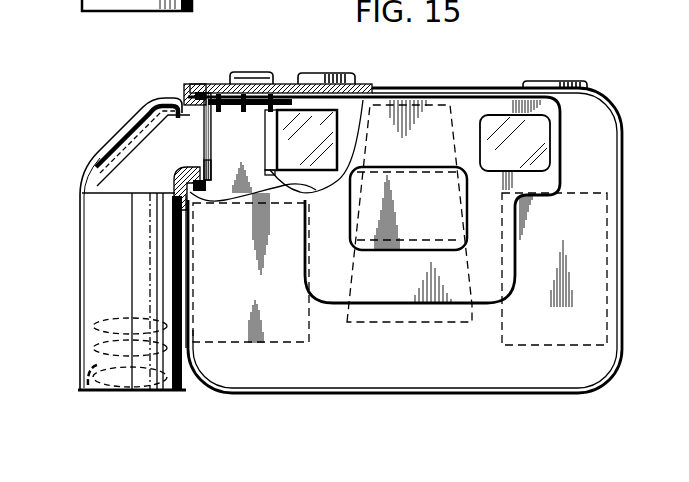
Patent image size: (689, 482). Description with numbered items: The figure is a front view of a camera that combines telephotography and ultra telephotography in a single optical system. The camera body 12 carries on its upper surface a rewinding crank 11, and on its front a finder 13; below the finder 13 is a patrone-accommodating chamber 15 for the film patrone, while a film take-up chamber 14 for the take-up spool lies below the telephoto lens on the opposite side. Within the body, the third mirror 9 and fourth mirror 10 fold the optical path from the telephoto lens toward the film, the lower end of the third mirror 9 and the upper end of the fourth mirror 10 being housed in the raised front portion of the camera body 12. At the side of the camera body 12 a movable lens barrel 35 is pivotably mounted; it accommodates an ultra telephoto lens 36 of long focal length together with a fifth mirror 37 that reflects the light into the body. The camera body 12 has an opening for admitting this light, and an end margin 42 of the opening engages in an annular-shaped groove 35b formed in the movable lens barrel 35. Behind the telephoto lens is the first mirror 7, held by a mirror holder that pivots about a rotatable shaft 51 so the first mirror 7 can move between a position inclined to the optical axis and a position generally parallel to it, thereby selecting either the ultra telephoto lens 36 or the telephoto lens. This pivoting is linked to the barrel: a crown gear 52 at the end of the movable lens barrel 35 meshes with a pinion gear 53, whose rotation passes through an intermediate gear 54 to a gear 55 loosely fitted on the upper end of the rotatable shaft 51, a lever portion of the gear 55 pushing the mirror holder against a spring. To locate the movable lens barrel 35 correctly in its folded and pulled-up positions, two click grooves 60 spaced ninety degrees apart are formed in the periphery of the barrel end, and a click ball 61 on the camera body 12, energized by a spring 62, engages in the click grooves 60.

The first mirror 7 is at (323, 110).
The third mirror 9 is at (422, 100).
The fourth mirror 10 is at (396, 322).
The rewinding crank 11 is at (556, 83).
The camera body 12 is at (490, 400).
The finder 13 is at (533, 149).
The film take-up chamber 14 is at (242, 343).
The patrone-accommodating chamber 15 is at (538, 345).
The movable lens barrel 35 is at (97, 264).
The annular-shaped groove 35b is at (166, 97).
The ultra telephoto lens 36 is at (78, 320).
The fifth mirror 37 is at (117, 133).
The end margin 42 is at (180, 92).
The rotatable shaft 51 is at (303, 193).
The crown gear 52 is at (203, 130).
The pinion gear 53 is at (216, 94).
The intermediate gear 54 is at (248, 98).
The gear 55 is at (275, 108).
The click grooves 60 is at (188, 168).
The click ball 61 is at (207, 172).
The spring 62 is at (212, 202).